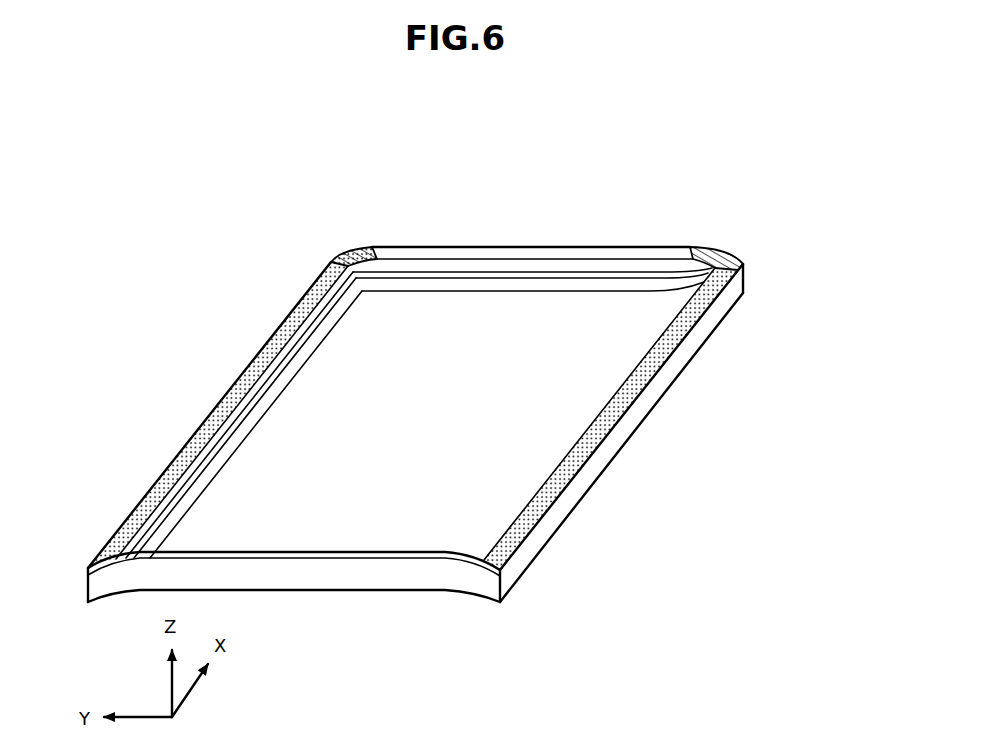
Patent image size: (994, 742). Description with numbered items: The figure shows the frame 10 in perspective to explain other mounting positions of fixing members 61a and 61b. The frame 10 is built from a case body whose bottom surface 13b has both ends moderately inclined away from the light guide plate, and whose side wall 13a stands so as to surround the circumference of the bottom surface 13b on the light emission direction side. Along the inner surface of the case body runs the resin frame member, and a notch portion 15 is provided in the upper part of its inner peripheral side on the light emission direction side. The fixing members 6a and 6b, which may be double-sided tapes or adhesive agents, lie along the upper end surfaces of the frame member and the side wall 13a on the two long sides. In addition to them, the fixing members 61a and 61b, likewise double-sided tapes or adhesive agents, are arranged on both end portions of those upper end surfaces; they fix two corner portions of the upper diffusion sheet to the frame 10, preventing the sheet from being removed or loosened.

The frame 10 is at (440, 353).
The fixing member 6a is at (238, 397).
The fixing member 6b is at (638, 392).
The fixing member 61a is at (354, 246).
The fixing member 61b is at (709, 252).
The notch portion 15 is at (527, 270).
The side wall 13a is at (718, 356).
The bottom surface 13b is at (457, 492).